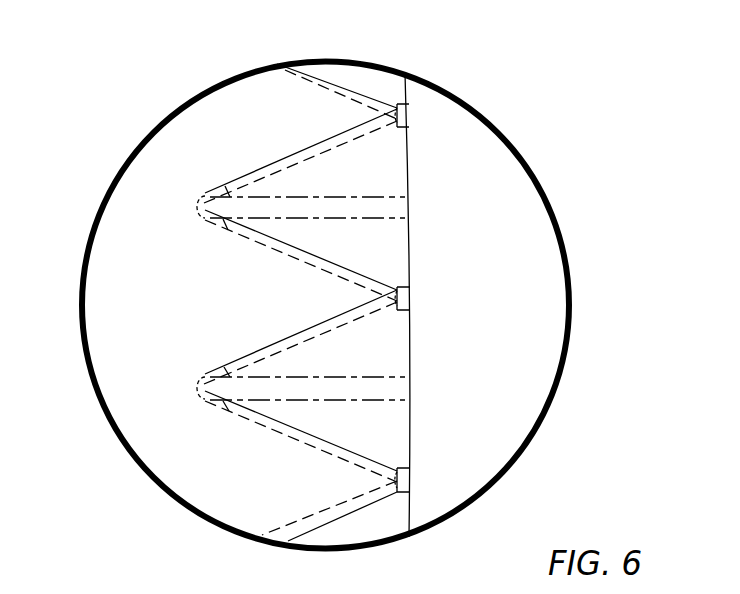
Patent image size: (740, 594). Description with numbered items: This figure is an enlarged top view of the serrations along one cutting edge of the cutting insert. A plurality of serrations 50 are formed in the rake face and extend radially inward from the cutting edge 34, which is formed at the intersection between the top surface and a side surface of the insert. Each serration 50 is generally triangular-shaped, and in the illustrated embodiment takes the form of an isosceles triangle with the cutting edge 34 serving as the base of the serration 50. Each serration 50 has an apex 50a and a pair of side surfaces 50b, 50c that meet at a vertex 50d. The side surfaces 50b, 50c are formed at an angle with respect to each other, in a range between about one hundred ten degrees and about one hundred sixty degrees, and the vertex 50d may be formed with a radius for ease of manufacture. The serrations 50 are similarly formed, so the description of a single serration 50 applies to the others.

The cutting edge 34 is at (409, 257).
The serration 50 is at (360, 389).
The apex 50a is at (199, 207).
The side surface 50b is at (346, 177).
The side surface 50c is at (345, 238).
The vertex 50d is at (268, 208).